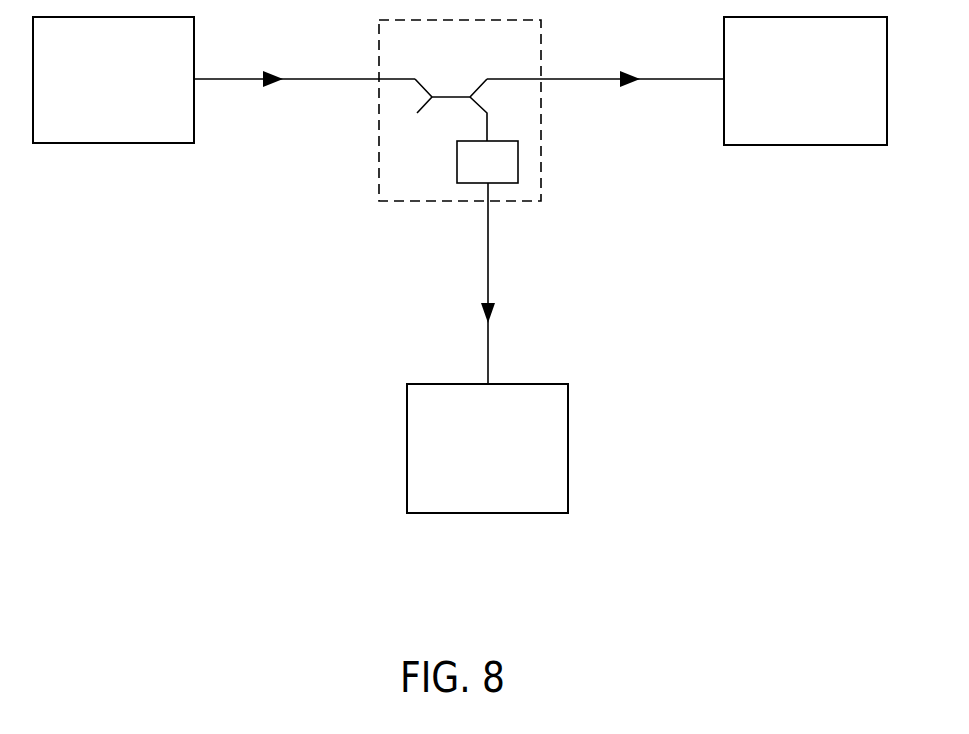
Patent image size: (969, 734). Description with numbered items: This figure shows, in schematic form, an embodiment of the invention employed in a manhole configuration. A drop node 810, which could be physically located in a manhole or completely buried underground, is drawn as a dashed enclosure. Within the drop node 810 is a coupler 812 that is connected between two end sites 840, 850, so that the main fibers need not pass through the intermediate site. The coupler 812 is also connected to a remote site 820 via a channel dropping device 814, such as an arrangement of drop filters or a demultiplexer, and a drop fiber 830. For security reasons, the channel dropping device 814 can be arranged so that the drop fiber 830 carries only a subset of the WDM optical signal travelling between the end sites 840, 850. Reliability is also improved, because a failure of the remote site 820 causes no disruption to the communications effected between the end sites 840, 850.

The drop node 810 is at (536, 50).
The coupler 812 is at (445, 96).
The channel dropping device 814 is at (508, 174).
The remote site 820 is at (508, 462).
The drop fiber 830 is at (488, 277).
The end site 840 is at (134, 93).
The end site 850 is at (826, 95).